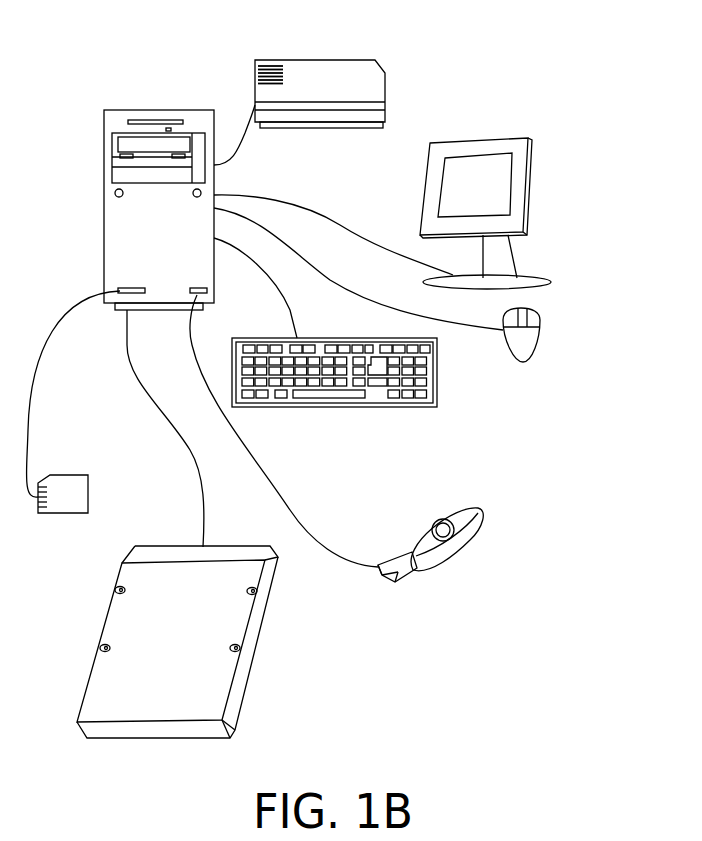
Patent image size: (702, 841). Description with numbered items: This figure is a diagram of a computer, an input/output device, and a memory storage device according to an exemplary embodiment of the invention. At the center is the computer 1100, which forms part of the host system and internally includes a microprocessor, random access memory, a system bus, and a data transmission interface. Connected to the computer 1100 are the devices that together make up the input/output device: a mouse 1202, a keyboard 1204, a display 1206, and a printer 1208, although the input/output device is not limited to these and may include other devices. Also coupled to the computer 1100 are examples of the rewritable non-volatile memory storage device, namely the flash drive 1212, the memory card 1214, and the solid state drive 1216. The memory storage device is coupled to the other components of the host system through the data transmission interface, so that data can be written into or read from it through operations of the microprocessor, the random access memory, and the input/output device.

The computer 1100 is at (157, 108).
The mouse 1202 is at (540, 338).
The keyboard 1204 is at (437, 383).
The display 1206 is at (488, 138).
The printer 1208 is at (315, 60).
The flash drive 1212 is at (428, 528).
The memory card 1214 is at (88, 485).
The solid state drive (SSD) 1216 is at (227, 537).